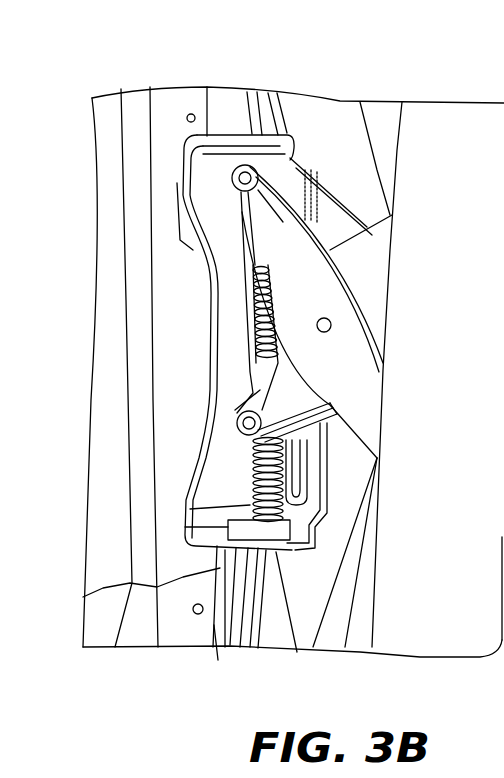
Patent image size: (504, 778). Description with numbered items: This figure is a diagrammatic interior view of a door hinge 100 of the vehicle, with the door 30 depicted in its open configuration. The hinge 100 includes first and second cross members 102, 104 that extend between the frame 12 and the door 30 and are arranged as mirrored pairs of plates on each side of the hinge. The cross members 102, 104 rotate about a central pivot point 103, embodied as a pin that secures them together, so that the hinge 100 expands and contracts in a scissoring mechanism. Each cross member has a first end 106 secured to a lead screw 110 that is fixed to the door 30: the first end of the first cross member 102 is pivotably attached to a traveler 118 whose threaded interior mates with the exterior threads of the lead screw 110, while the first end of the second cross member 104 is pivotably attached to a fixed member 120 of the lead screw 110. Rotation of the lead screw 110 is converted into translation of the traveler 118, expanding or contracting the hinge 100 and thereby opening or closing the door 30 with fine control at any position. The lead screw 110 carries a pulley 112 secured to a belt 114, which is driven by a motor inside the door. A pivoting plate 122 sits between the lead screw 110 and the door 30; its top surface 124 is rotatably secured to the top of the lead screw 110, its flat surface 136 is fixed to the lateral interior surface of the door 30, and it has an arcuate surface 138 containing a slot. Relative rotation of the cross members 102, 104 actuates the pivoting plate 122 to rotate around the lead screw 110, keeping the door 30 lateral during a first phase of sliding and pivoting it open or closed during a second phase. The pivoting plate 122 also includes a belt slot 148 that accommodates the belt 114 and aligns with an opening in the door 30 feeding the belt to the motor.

The frame 12 is at (482, 203).
The door 30 is at (118, 374).
The hinge 100 is at (351, 145).
The first cross member 102 is at (378, 272).
The central pivot point 103 is at (323, 318).
The second cross member 104 is at (353, 371).
The first end 106 is at (257, 395).
The lead screw 110 is at (257, 470).
The pulley 112 is at (297, 652).
The belt 114 is at (226, 657).
The traveler 118 is at (310, 440).
The fixed member 120 is at (206, 203).
The pivoting plate 122 is at (207, 284).
The top surface 124 is at (243, 136).
The flat surface 136 is at (225, 190).
The arcuate surface 138 is at (312, 496).
The belt slot 148 is at (228, 507).